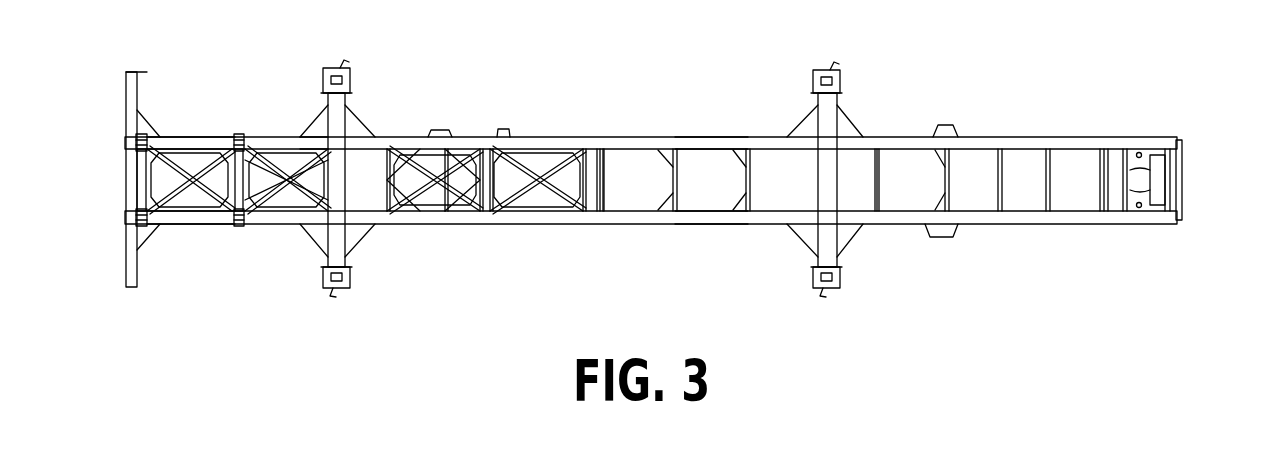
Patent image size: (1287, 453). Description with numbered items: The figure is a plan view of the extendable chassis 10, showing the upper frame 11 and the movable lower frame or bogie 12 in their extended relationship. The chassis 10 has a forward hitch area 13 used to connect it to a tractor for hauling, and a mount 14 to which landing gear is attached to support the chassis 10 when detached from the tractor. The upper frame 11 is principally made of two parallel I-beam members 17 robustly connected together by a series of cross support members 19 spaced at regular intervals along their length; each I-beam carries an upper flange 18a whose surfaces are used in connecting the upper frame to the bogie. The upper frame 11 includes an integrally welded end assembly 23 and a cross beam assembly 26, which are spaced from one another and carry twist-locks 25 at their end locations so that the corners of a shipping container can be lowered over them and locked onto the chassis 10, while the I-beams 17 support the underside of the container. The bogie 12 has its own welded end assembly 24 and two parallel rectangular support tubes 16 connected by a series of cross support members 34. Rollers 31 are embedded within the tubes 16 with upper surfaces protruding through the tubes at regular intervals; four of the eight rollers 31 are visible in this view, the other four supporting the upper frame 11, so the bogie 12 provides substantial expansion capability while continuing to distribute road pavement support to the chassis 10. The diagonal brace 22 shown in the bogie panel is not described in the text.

The extendable chassis 10 is at (433, 68).
The upper frame 11 is at (607, 230).
The bogie 12 is at (284, 133).
The forward hitch area 13 is at (1187, 179).
The mount 14 is at (940, 247).
The rectangular support tubes 16 is at (200, 137).
The I-beam members 17 is at (675, 224).
The upper flange 18a is at (492, 224).
The cross support members 19 is at (675, 149).
The diagonal brace 22 is at (305, 192).
The end assembly 23 is at (337, 243).
The end assembly 24 is at (118, 178).
The twist-lock 25 is at (345, 80).
The cross beam assembly 26 is at (830, 243).
The rollers 31 is at (143, 136).
The cross support members 34 is at (250, 197).